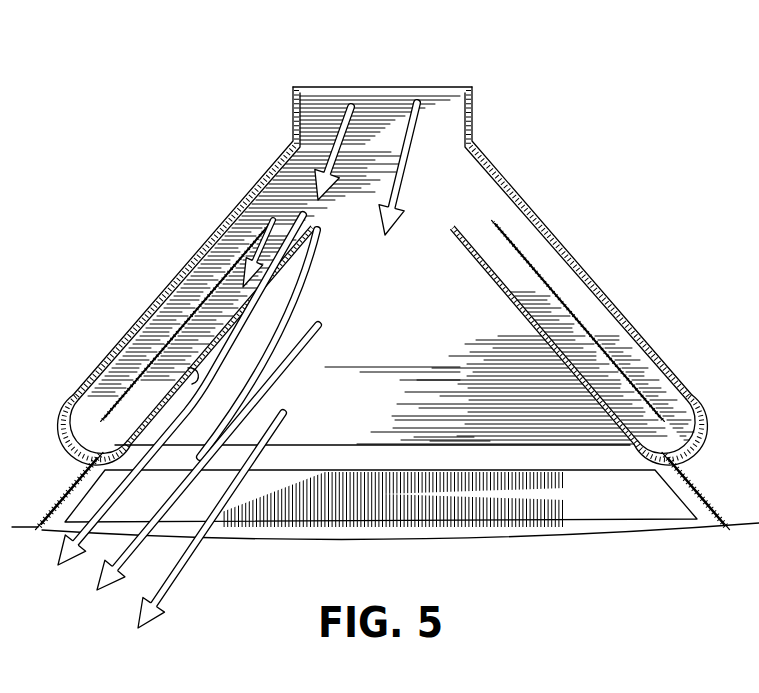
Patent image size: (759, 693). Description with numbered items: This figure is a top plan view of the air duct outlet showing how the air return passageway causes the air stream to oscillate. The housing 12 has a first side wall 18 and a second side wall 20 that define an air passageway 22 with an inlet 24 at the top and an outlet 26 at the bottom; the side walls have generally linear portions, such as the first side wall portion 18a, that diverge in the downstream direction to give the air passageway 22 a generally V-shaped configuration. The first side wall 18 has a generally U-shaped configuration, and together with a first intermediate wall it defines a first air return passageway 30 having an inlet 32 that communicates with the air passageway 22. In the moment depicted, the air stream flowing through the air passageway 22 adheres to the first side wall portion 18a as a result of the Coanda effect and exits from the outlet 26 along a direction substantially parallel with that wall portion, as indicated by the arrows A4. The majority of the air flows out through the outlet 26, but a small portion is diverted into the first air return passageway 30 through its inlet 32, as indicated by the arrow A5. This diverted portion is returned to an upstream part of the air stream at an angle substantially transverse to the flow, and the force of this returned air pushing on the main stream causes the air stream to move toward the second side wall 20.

The housing 12 is at (531, 211).
The first side wall 18 is at (173, 383).
The first side wall portion 18a is at (190, 380).
The second side wall 20 is at (547, 337).
The air passageway 22 is at (444, 122).
The inlet 24 is at (300, 97).
The outlet 26 is at (698, 526).
The first air return passageway 30 is at (84, 430).
The inlet 32 is at (283, 228).
The arrows A4 is at (138, 630).
The arrow A5 is at (224, 224).